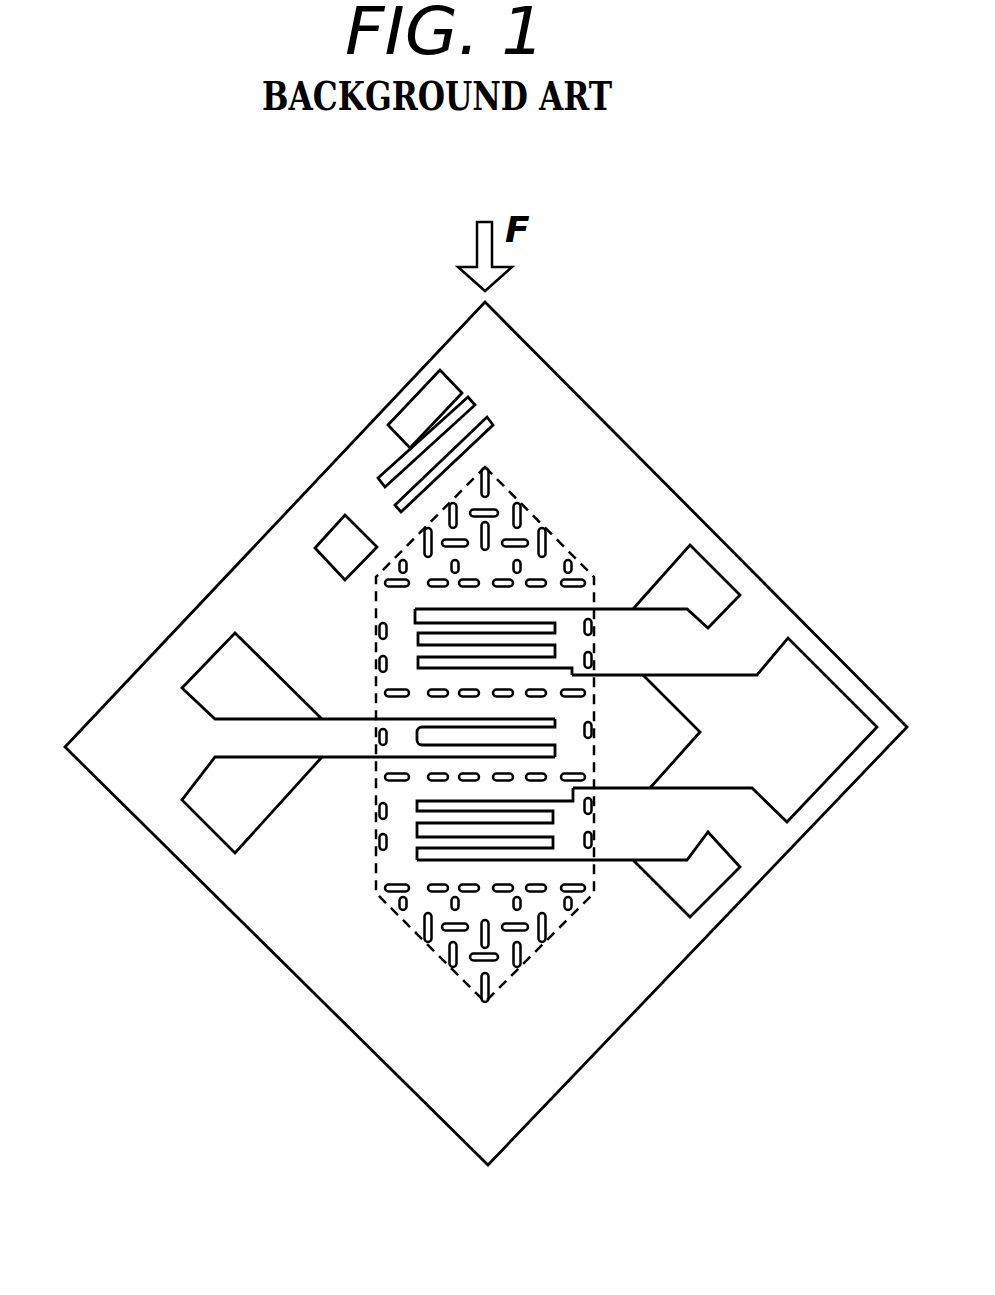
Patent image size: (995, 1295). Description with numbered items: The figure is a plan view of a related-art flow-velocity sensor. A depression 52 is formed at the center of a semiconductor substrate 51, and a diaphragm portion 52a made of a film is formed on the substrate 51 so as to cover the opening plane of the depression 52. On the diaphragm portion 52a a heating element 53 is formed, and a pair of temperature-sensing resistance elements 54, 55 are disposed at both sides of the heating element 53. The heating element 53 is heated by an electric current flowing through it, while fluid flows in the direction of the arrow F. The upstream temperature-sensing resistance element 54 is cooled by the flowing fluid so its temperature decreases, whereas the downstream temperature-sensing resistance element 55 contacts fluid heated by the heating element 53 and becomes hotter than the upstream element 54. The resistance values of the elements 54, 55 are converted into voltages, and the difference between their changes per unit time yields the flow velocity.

The semiconductor substrate 51 is at (672, 490).
The depression 52 is at (525, 530).
The diaphragm portion 52a is at (573, 868).
The heating element 53 is at (450, 742).
The temperature-sensing resistance element 54 is at (435, 612).
The temperature-sensing resistance element 55 is at (452, 850).